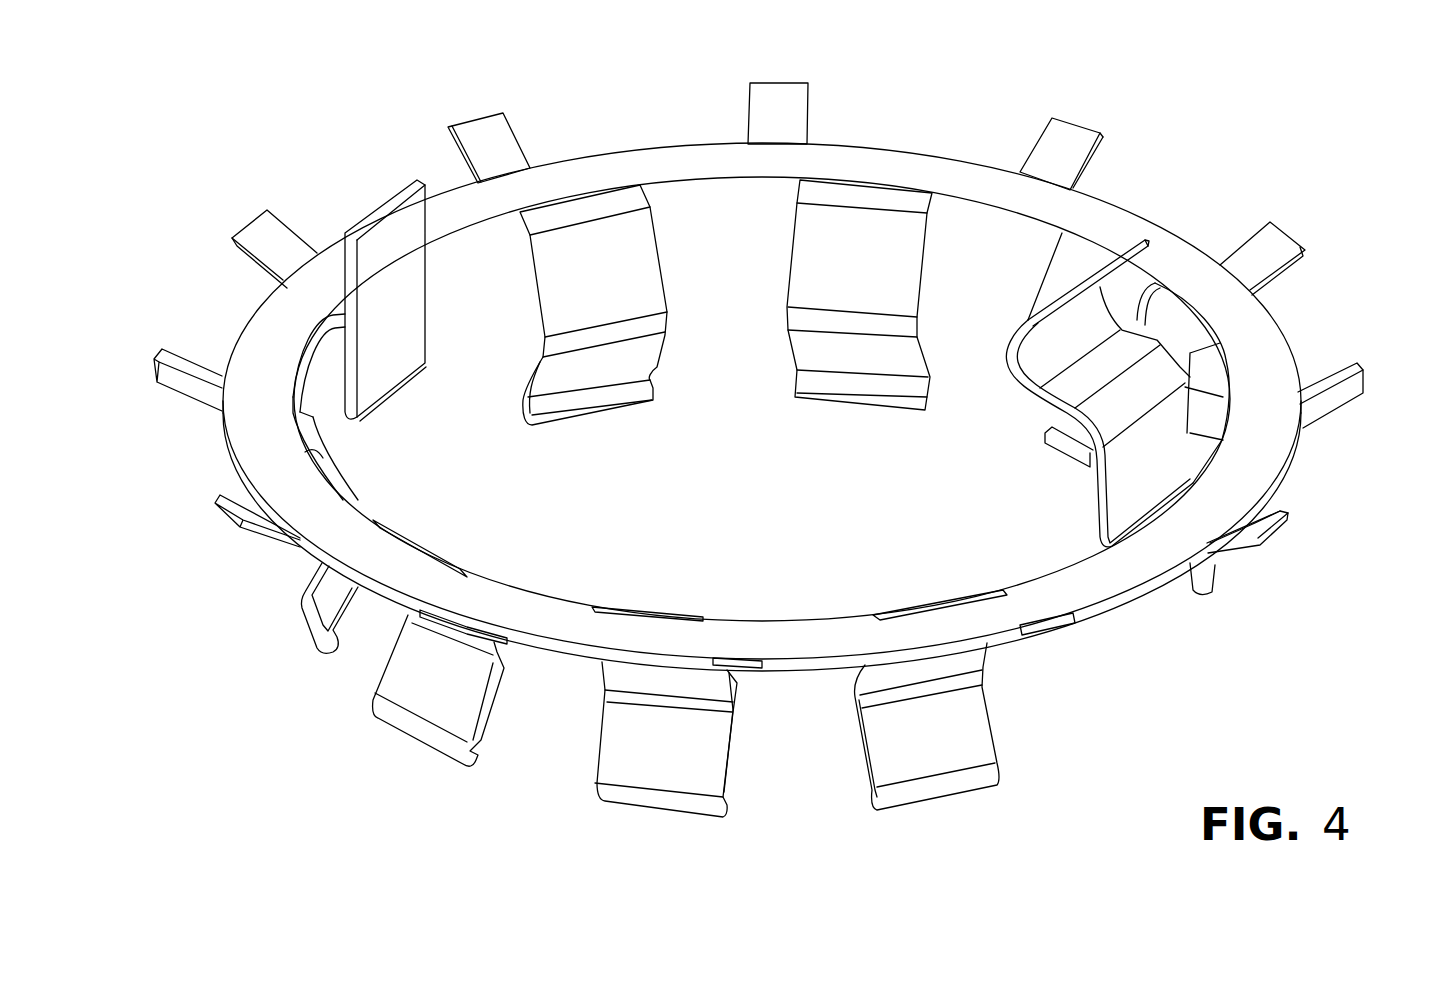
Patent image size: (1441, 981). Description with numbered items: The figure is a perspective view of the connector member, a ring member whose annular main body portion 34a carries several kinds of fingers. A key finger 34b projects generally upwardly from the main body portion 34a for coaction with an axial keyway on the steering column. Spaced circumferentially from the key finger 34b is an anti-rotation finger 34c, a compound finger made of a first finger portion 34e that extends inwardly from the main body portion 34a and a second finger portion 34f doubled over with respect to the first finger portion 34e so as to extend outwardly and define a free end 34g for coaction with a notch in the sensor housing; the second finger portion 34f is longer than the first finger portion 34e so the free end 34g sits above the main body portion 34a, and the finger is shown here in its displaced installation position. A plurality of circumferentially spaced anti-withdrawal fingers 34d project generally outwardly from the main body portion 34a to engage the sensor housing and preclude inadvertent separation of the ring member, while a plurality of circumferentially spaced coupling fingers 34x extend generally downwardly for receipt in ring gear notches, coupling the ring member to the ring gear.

The annular main body portion 34a is at (722, 150).
The key finger 34b is at (1148, 243).
The anti-rotation finger 34c is at (400, 197).
The anti-withdrawal fingers 34d is at (1295, 248).
The first finger portion 34e is at (340, 378).
The second finger portion 34f is at (390, 362).
The free end 34g is at (360, 223).
The coupling fingers 34x is at (617, 790).